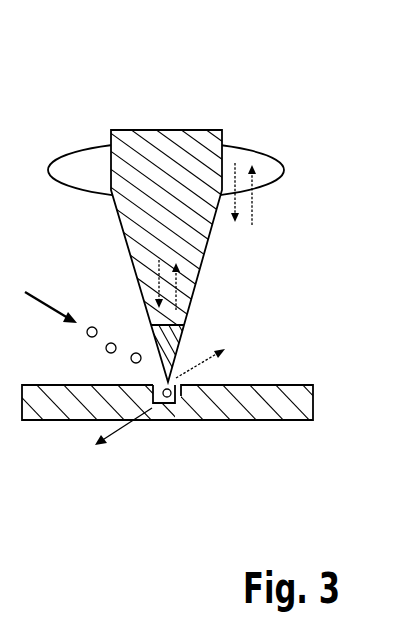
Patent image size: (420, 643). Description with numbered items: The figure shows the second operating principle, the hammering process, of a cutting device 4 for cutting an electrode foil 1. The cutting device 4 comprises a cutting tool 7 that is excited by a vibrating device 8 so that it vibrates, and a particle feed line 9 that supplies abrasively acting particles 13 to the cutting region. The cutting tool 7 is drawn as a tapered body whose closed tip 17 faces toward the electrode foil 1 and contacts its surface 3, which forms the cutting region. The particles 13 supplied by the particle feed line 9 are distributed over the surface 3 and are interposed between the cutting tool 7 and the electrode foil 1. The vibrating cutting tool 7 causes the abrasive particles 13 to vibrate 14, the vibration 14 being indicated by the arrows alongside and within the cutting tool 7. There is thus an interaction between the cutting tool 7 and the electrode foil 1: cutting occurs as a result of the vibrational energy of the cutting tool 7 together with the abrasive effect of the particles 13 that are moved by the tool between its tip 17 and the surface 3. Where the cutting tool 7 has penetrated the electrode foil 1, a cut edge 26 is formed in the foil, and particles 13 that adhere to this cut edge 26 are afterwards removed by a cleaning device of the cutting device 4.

The electrode foil 1 is at (263, 413).
The surface 3 is at (292, 384).
The cutting device 4 is at (266, 90).
The cutting tool 7 is at (172, 345).
The vibrating device 8 is at (70, 152).
The particle feed line 9 is at (53, 308).
The particles 13 is at (93, 327).
The vibration 14 is at (253, 205).
The closed tip 17 is at (153, 386).
The cut edge 26 is at (157, 404).